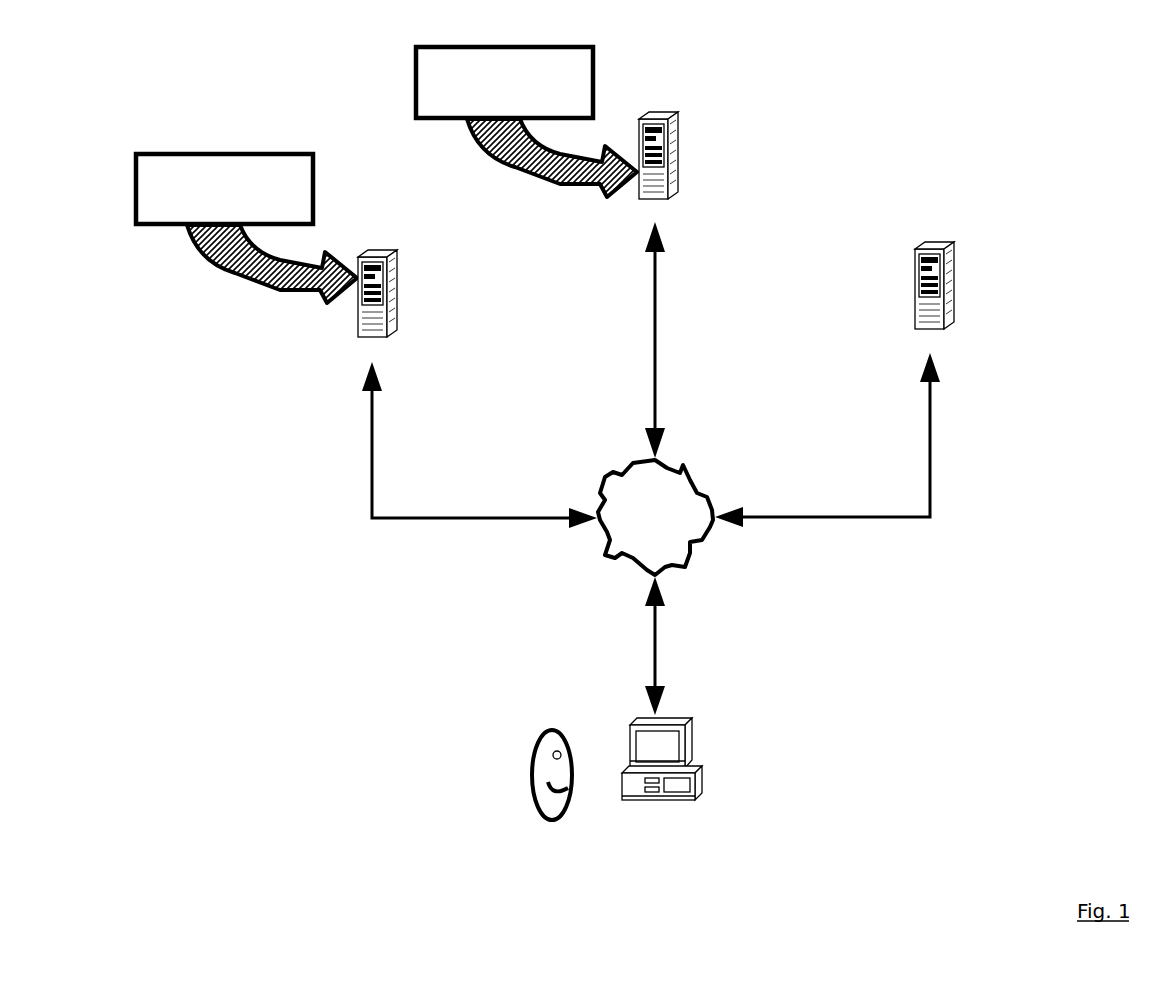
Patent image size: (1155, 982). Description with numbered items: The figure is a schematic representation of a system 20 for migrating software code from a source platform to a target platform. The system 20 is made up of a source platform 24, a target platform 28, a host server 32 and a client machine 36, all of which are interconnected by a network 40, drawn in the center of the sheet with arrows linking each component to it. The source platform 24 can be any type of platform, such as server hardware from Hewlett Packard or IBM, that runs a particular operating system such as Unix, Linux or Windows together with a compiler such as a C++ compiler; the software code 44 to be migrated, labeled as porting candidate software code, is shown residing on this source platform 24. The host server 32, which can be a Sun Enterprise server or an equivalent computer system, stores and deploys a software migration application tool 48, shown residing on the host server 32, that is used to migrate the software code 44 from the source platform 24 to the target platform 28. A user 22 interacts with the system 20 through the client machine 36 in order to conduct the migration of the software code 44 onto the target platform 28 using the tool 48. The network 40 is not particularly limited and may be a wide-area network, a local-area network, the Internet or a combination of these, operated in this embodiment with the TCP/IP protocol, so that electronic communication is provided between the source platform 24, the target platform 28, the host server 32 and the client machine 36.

The system for migration of software code 20 is at (292, 742).
The user 22 is at (534, 720).
The source platform 24 is at (402, 246).
The target platform 28 is at (959, 236).
The host server 32 is at (680, 107).
The client machine 36 is at (714, 727).
The network 40 is at (644, 528).
The software code 44 is at (249, 143).
The software migration application tool 48 is at (598, 76).